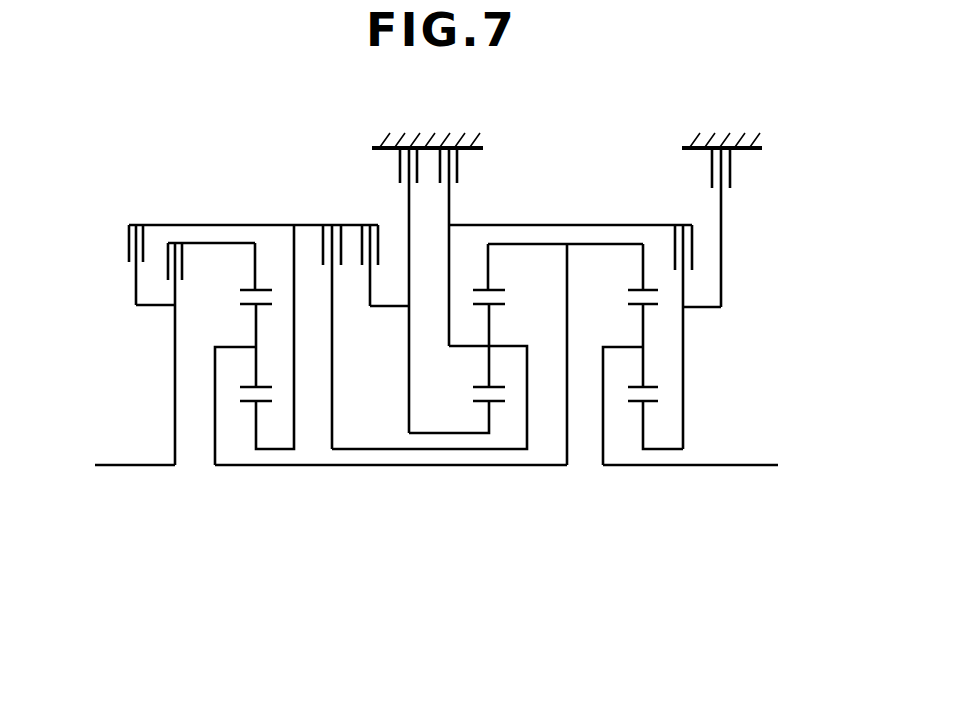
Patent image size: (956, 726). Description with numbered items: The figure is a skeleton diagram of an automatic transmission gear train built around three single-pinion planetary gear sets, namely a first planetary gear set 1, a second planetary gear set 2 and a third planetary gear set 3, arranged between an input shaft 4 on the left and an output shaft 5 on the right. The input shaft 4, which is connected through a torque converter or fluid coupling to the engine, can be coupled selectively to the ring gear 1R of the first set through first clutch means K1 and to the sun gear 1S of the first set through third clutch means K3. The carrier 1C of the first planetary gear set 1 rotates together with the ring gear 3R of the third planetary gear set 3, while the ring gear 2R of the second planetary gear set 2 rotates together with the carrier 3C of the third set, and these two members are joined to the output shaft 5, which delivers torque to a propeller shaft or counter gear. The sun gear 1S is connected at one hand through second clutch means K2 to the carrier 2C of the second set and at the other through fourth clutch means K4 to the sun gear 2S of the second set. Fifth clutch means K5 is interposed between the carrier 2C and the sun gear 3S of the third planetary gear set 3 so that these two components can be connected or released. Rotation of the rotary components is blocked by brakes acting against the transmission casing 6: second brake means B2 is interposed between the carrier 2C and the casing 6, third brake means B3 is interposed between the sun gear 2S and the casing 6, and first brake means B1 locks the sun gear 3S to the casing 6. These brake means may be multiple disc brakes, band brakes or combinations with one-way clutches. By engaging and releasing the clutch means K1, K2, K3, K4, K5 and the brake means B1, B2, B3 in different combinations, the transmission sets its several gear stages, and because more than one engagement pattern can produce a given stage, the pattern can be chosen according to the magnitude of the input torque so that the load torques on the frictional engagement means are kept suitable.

The first planetary gear set 1 is at (236, 457).
The second planetary gear set 2 is at (470, 447).
The third planetary gear set 3 is at (626, 459).
The input shaft 4 is at (145, 463).
The output shaft 5 is at (718, 464).
The transmission casing 6 is at (392, 139).
The first clutch means K1 is at (211, 354).
The second clutch means K2 is at (333, 323).
The third clutch means K3 is at (250, 250).
The fourth clutch means K4 is at (385, 252).
The fifth clutch means K5 is at (680, 323).
The first brake means B1 is at (712, 207).
The second brake means B2 is at (566, 225).
The third brake means B3 is at (408, 269).
The ring gear of the first planetary gear set 1R is at (258, 290).
The carrier of the first planetary gear set 1C is at (241, 347).
The sun gear of the first planetary gear set 1S is at (263, 403).
The ring gear of the second planetary gear set 2R is at (492, 291).
The carrier of the second planetary gear set 2C is at (497, 346).
The sun gear of the second planetary gear set 2S is at (483, 403).
The ring gear of the third planetary gear set 3R is at (641, 291).
The carrier of the third planetary gear set 3C is at (633, 347).
The sun gear of the third planetary gear set 3S is at (649, 403).